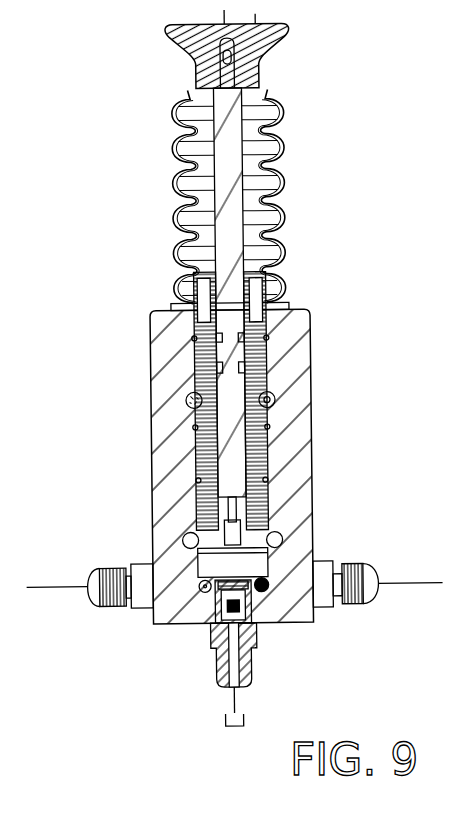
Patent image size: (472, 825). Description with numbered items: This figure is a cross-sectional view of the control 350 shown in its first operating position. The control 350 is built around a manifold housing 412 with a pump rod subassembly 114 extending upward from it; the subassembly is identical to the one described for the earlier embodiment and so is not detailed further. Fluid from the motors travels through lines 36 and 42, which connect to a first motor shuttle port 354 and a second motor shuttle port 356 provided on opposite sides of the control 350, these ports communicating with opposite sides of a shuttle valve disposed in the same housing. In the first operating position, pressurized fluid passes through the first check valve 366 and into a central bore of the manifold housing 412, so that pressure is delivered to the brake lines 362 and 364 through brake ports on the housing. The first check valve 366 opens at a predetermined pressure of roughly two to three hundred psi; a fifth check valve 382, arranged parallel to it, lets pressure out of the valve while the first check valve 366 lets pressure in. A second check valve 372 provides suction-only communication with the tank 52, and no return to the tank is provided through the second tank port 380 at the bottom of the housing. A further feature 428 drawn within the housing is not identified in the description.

The control 350 is at (122, 282).
The pump rod subassembly 114 is at (293, 235).
The manifold housing 412 is at (296, 341).
The tank 52 is at (150, 400).
The brake line 362 is at (195, 536).
The brake line 364 is at (268, 531).
The chamber 428 is at (207, 563).
The fifth check valve 382 is at (199, 583).
The first check valve 366 is at (268, 581).
The second check valve 372 is at (213, 630).
The second tank port 380 is at (250, 680).
The first motor shuttle port 354 is at (90, 594).
The line 36 is at (42, 587).
The second motor shuttle port 356 is at (375, 596).
The line 42 is at (405, 582).